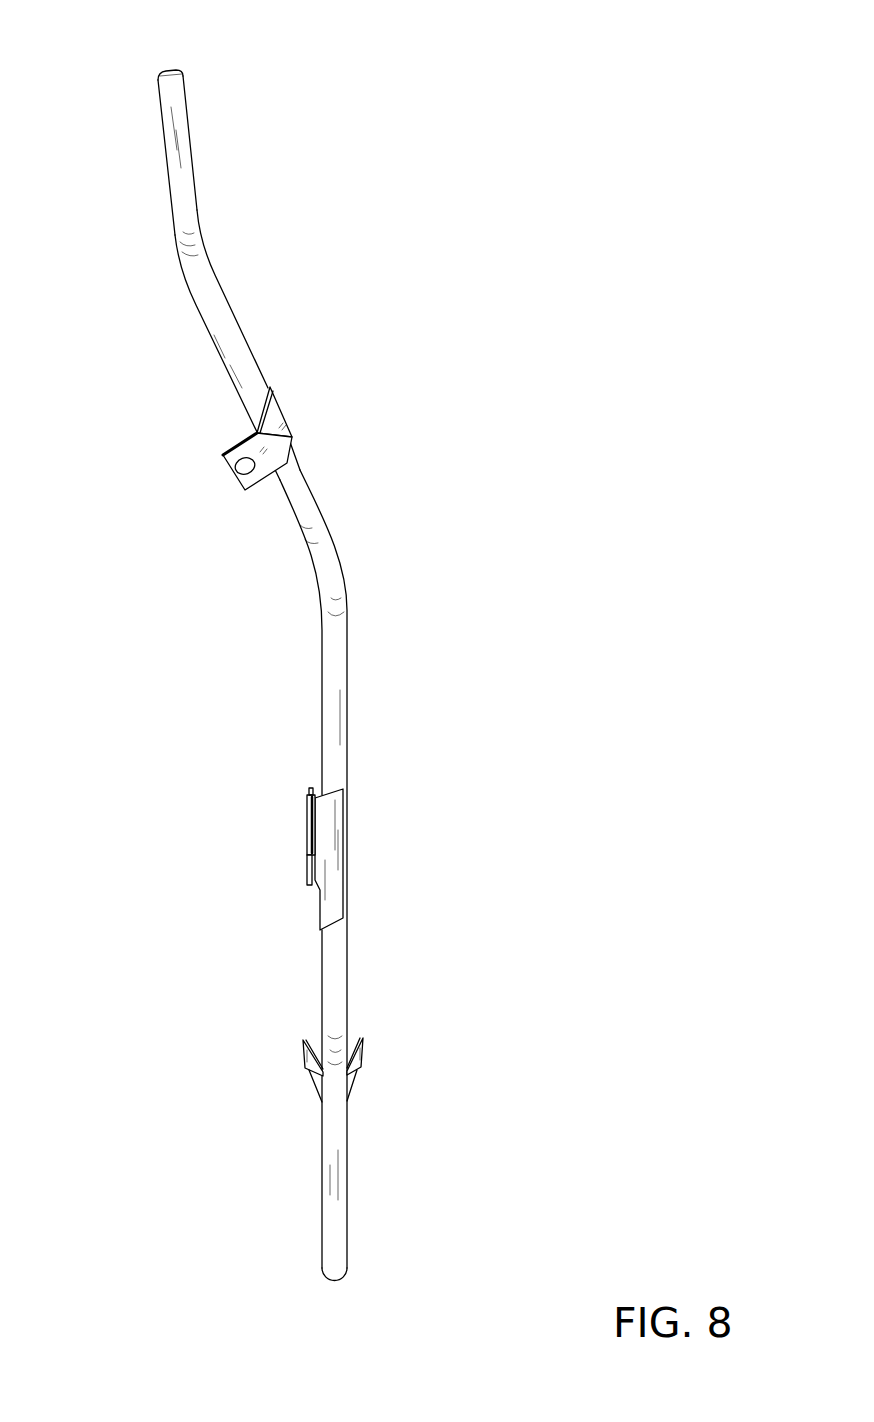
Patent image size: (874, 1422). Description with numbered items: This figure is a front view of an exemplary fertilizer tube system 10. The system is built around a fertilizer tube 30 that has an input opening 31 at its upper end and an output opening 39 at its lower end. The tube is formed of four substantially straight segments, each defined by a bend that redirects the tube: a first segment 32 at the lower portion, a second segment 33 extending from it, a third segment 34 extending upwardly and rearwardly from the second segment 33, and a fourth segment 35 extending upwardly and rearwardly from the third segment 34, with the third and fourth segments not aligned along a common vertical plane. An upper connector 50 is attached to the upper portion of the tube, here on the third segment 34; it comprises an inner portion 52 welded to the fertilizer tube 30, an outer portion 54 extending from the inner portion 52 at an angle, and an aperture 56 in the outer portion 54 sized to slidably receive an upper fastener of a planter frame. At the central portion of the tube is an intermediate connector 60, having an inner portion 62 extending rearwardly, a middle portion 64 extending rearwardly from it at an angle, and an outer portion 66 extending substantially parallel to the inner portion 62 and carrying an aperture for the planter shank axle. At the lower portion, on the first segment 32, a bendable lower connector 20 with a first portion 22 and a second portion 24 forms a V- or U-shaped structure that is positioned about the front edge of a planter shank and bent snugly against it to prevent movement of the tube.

The fertilizer tube system 10 is at (482, 212).
The lower connector 20 is at (359, 1045).
The first portion 22 is at (310, 1083).
The second portion 24 is at (353, 1085).
The fertilizer tube 30 is at (276, 666).
The input opening 31 is at (167, 72).
The first segment 32 is at (348, 1132).
The second segment 33 is at (347, 732).
The third segment 34 is at (248, 345).
The fourth segment 35 is at (192, 143).
The output opening 39 is at (335, 1280).
The upper connector 50 is at (243, 445).
The inner portion 52 is at (272, 417).
The outer portion 54 is at (227, 453).
The aperture 56 is at (233, 475).
The intermediate connector 60 is at (220, 817).
The inner portion 62 is at (303, 810).
The middle portion 64 is at (307, 833).
The outer portion 66 is at (307, 805).